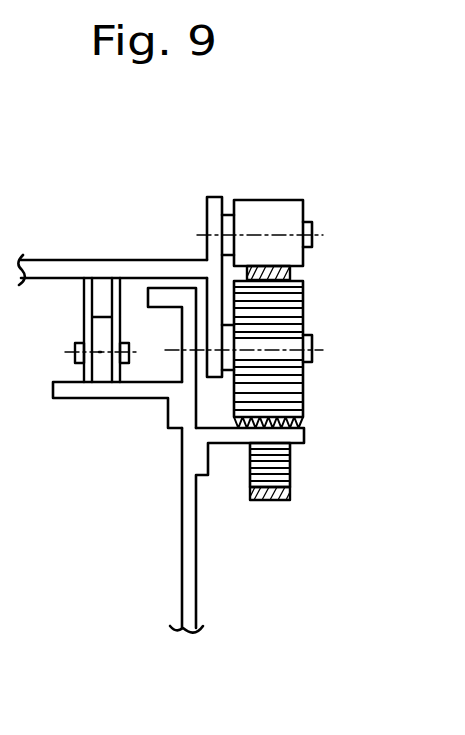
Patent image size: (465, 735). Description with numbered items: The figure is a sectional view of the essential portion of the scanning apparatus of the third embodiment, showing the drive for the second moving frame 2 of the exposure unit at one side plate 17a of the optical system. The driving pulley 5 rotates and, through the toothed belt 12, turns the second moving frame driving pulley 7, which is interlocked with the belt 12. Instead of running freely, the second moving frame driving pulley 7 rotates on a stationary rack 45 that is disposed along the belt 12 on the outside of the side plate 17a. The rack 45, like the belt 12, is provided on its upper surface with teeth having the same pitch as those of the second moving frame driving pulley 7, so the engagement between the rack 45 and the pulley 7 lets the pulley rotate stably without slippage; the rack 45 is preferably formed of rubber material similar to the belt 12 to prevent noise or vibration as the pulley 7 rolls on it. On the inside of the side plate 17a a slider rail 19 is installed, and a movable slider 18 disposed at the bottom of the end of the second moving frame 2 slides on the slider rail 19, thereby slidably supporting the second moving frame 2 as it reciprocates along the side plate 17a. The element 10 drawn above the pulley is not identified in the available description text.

The second moving frame 2 is at (45, 268).
The motor 10 is at (265, 202).
The toothed belt 12 is at (284, 269).
The second moving frame driving pulley 7 is at (290, 314).
The stationary rack 45 is at (303, 420).
The driving pulley 5 is at (288, 472).
The slider 18 is at (98, 378).
The slider rail 19 is at (133, 393).
The side plate 17a is at (188, 602).